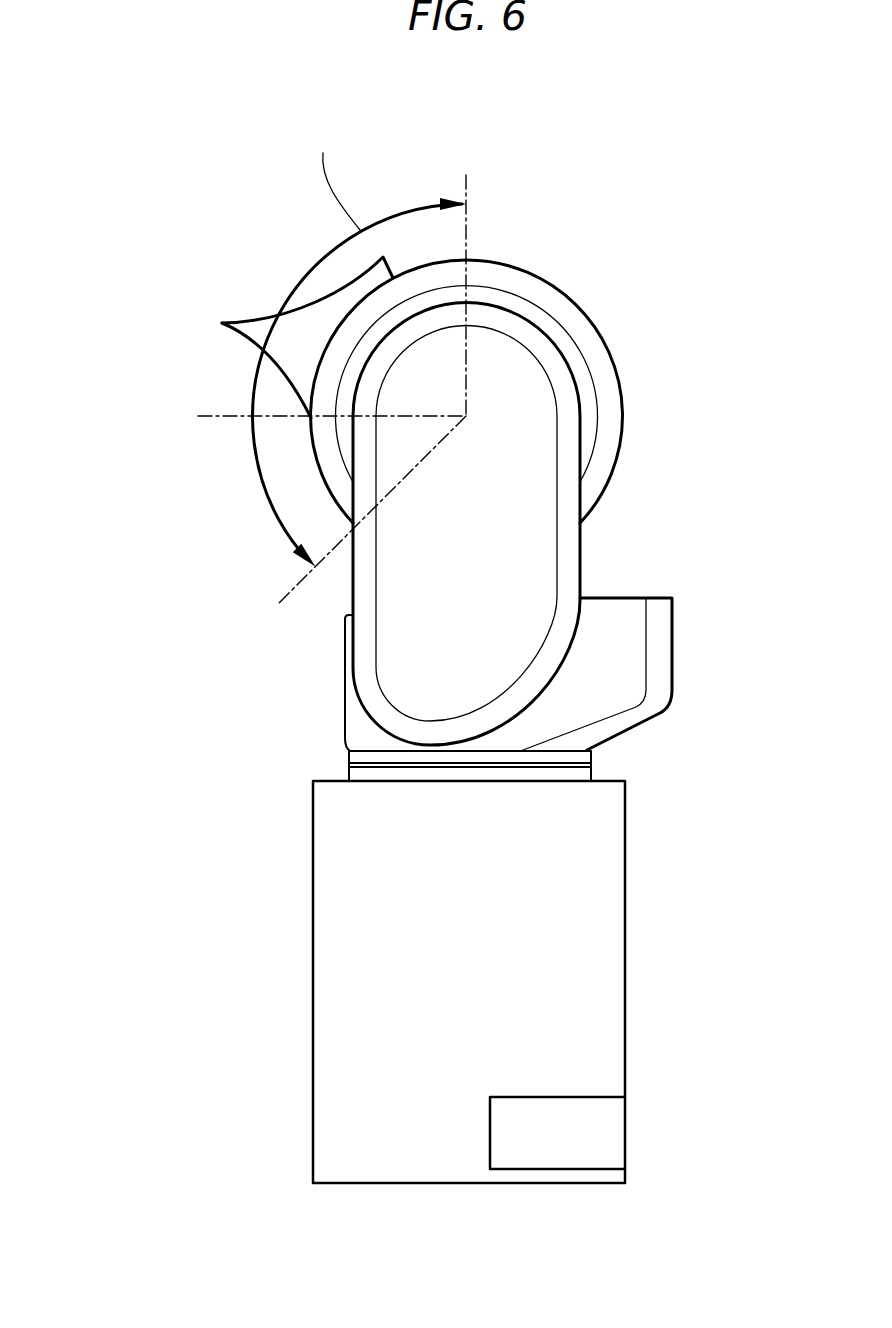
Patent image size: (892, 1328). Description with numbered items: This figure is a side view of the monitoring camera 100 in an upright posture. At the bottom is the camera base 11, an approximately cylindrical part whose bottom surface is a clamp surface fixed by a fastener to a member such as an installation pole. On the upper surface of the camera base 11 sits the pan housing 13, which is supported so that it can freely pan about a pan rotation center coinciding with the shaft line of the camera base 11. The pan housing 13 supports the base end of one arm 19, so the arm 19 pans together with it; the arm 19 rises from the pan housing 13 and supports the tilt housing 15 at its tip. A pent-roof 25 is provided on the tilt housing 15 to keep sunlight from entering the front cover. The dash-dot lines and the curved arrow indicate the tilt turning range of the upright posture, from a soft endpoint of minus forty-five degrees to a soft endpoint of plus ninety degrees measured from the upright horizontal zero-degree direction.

The monitoring camera 100 is at (222, 190).
The camera base 11 is at (625, 976).
The pan housing 13 is at (633, 648).
The tilt housing 15 is at (542, 277).
The arm 19 is at (581, 557).
The pent-roof 25 is at (222, 323).